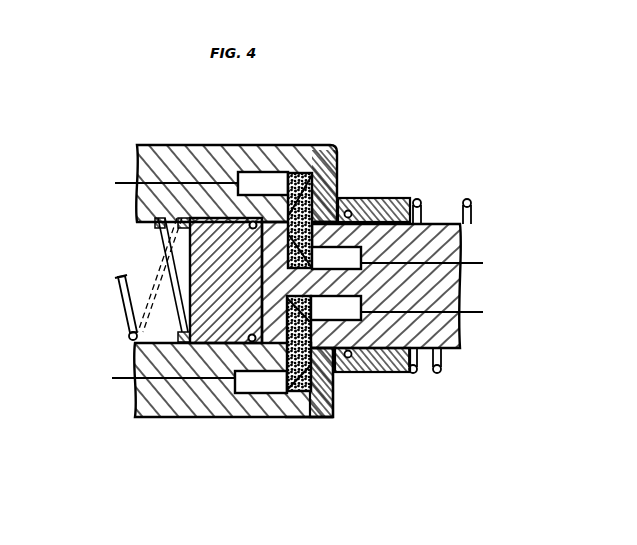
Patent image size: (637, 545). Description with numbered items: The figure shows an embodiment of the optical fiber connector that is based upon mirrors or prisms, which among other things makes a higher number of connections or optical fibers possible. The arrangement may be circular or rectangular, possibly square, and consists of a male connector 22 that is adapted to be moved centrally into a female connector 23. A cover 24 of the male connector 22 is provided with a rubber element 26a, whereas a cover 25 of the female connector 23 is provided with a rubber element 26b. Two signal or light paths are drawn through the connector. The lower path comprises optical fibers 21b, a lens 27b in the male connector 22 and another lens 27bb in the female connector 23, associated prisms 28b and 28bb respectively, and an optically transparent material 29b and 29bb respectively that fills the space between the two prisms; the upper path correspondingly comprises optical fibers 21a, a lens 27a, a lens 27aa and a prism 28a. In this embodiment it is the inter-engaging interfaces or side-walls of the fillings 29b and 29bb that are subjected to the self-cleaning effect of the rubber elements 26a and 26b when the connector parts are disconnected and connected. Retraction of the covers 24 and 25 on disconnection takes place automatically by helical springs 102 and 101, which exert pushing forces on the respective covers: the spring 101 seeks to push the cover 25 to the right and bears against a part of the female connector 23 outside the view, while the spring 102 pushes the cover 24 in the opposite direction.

The optical fibers 21a is at (295, 209).
The optical fibers 21b is at (439, 313).
The male connector 22 is at (428, 332).
The female connector 23 is at (173, 398).
The cover 24 is at (368, 198).
The cover 25 is at (215, 258).
The rubber element 26a is at (350, 209).
The rubber element 26b is at (190, 229).
The lens 27a is at (390, 197).
The lens 27aa is at (257, 172).
The lens 27b is at (350, 358).
The lens 27bb is at (220, 417).
The prism 28a is at (305, 173).
The prism 28b is at (173, 343).
The prism 28bb is at (317, 418).
The optically transparent material 29b is at (335, 416).
The optically transparent material 29bb is at (293, 400).
The helical spring 101 is at (120, 303).
The helical spring 102 is at (437, 374).